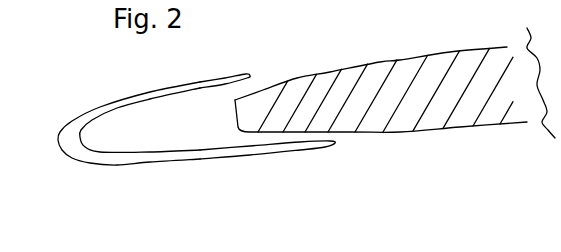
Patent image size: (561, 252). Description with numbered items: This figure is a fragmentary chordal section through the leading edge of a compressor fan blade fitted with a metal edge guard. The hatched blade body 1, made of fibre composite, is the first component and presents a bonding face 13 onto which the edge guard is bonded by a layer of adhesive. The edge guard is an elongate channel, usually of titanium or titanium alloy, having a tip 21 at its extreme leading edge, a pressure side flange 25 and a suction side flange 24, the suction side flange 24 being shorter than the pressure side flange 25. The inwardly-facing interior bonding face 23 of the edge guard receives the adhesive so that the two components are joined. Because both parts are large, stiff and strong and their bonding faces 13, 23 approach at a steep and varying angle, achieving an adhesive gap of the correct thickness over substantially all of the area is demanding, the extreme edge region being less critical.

The blade body 1 is at (460, 117).
The bonding face 13 is at (288, 80).
The tip 21 is at (63, 133).
The interior bonding face 23 is at (132, 107).
The suction side flange 24 is at (212, 80).
The pressure side flange 25 is at (292, 152).